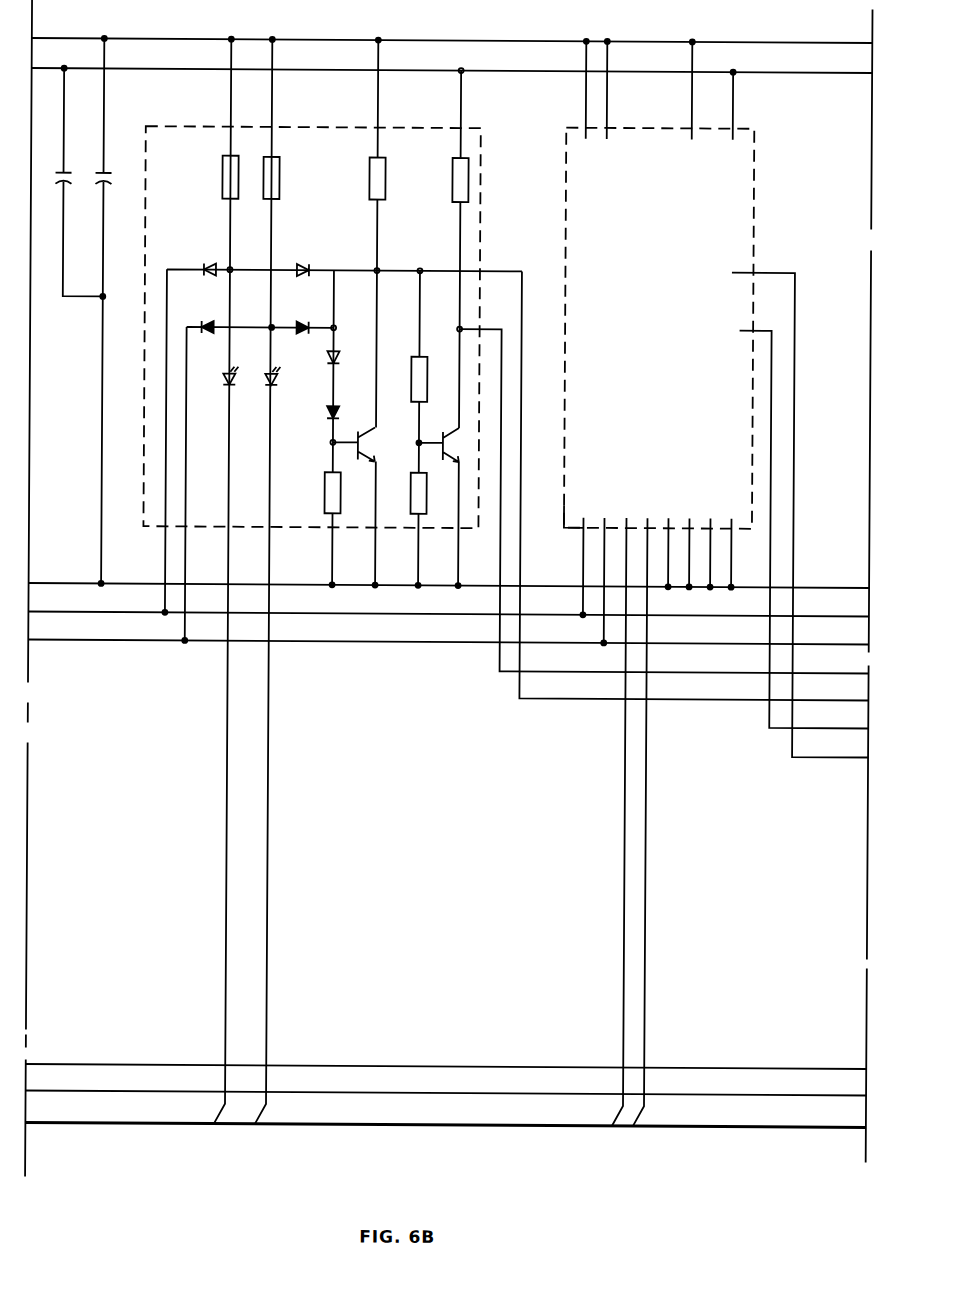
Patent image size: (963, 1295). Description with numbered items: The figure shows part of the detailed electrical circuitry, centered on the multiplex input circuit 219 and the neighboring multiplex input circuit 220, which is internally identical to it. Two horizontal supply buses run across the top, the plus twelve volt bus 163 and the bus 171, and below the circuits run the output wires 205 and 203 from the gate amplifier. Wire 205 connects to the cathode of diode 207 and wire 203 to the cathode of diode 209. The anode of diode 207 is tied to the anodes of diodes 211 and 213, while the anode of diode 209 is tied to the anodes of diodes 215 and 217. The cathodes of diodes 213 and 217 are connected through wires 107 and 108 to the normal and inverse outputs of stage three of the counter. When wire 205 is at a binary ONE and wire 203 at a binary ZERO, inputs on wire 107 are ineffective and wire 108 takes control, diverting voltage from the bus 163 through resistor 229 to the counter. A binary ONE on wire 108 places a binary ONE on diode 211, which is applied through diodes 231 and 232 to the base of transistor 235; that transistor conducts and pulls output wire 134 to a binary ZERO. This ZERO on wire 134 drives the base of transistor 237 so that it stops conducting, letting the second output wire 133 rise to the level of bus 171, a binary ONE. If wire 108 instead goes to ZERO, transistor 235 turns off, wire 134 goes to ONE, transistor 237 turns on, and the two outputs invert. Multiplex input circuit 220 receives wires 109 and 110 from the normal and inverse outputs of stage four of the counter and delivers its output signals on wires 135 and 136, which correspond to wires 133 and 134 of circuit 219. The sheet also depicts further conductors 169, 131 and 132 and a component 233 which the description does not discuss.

The +12 volt bus 163 is at (53, 39).
The bus 171 is at (41, 70).
The ground line 169 is at (47, 584).
The output wire 205 is at (48, 612).
The output wire 203 is at (49, 640).
The multiplex input circuit 219 is at (303, 128).
The multiplex input circuit 220 is at (658, 111).
The resistor 229 is at (220, 184).
The diode 207 is at (208, 264).
The diode 209 is at (208, 322).
The diode 211 is at (302, 264).
The diode 215 is at (302, 322).
The diode 213 is at (223, 388).
The diode 217 is at (277, 386).
The diode 231 is at (336, 351).
The diode 232 is at (337, 407).
The resistor 233 is at (324, 486).
The transistor 235 is at (360, 440).
The transistor 237 is at (446, 431).
The output wire 133 is at (498, 328).
The output wire 134 is at (515, 270).
The output wire 135 is at (748, 328).
The output wire 136 is at (757, 270).
The wire 107 is at (226, 1002).
The wire 108 is at (258, 992).
The wire 109 is at (624, 1000).
The wire 110 is at (650, 996).
The line 131 is at (446, 1059).
The line 132 is at (446, 1086).